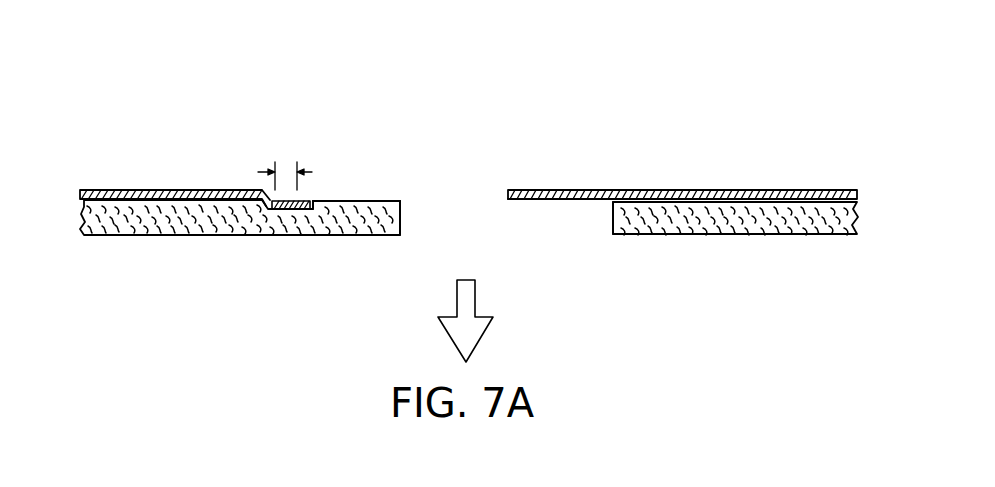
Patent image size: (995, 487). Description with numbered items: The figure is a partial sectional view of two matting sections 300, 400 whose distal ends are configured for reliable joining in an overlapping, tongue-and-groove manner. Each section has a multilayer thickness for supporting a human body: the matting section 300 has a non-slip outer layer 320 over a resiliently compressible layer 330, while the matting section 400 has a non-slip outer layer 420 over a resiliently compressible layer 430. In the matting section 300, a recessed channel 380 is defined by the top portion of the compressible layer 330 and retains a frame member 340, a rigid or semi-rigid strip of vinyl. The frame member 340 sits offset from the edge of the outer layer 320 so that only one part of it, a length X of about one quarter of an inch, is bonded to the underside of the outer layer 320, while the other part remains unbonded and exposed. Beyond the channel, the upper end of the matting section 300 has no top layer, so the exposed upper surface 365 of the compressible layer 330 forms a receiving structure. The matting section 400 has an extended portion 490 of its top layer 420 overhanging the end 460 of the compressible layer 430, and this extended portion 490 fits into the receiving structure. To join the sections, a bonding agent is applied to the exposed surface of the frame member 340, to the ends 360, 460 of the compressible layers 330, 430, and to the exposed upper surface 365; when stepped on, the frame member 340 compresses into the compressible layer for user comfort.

The matting section 300 is at (135, 166).
The non-slip outer layer 320 is at (233, 185).
The resiliently compressible layer 330 is at (357, 228).
The frame member 340 is at (310, 192).
The end of compressible layer 360 is at (402, 213).
The exposed upper surface of compressible layer 365 is at (373, 200).
The recessed channel 380 is at (318, 195).
The matting section 400 is at (677, 164).
The non-slip outer layer 420 is at (745, 190).
The resiliently compressible layer 430 is at (680, 225).
The end of compressible layer 460 is at (612, 215).
The extended portion of top layer 490 is at (540, 200).